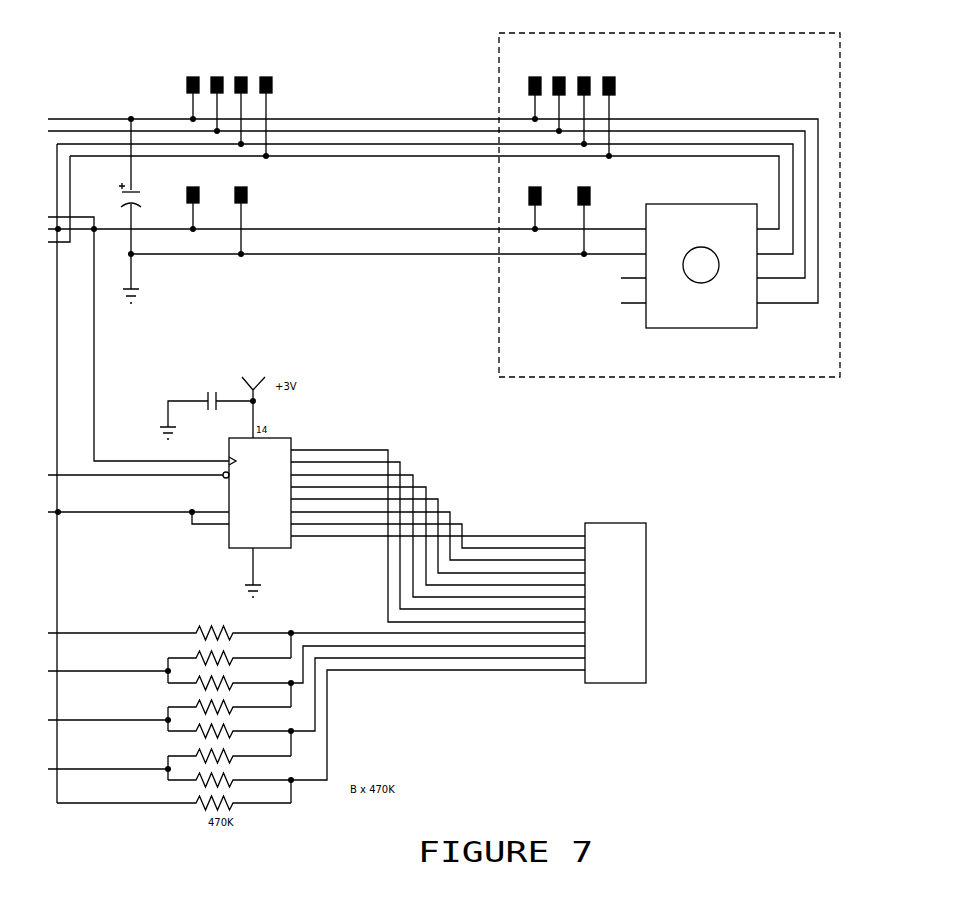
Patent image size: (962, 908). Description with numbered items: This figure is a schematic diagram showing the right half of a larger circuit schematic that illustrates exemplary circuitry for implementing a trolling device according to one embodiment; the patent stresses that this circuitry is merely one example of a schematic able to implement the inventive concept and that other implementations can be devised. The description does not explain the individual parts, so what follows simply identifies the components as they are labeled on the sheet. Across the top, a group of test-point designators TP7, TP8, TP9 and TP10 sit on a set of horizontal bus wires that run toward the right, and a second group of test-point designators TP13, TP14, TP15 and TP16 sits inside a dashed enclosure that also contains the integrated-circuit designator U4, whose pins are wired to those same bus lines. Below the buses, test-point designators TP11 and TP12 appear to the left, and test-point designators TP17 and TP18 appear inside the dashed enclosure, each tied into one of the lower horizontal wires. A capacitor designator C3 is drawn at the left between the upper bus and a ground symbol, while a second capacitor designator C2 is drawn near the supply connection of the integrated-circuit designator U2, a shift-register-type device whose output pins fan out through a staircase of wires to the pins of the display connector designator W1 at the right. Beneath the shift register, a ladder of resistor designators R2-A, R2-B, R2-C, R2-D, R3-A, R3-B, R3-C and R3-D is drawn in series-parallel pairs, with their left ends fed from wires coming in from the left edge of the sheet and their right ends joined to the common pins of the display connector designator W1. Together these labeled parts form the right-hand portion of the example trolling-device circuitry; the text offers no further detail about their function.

The test point TP7 is at (193, 87).
The test point TP8 is at (217, 93).
The test point TP9 is at (241, 99).
The test point TP10 is at (266, 102).
The test point TP11 is at (192, 201).
The test point TP12 is at (240, 213).
The test point TP13 is at (535, 84).
The test point TP14 is at (559, 90).
The test point TP15 is at (584, 97).
The test point TP16 is at (609, 102).
The test point TP17 is at (534, 201).
The test point TP18 is at (584, 213).
The 47uF capacitor C3 is at (115, 211).
The 0.1uF capacitor C2 is at (206, 405).
The 74HC164 shift register U2 is at (235, 507).
The MSS541B sensor U4 is at (693, 267).
The LCD-S401M167R display W1 is at (605, 605).
The 470K resistor R2-A is at (169, 629).
The 470K resistor R2-B is at (229, 654).
The 470K resistor R2-C is at (229, 679).
The 470K resistor R2-D is at (229, 703).
The 470K resistor R3-A is at (229, 727).
The 470K resistor R3-B is at (229, 752).
The 470K resistor R3-C is at (229, 776).
The 470K resistor R3-D is at (174, 799).